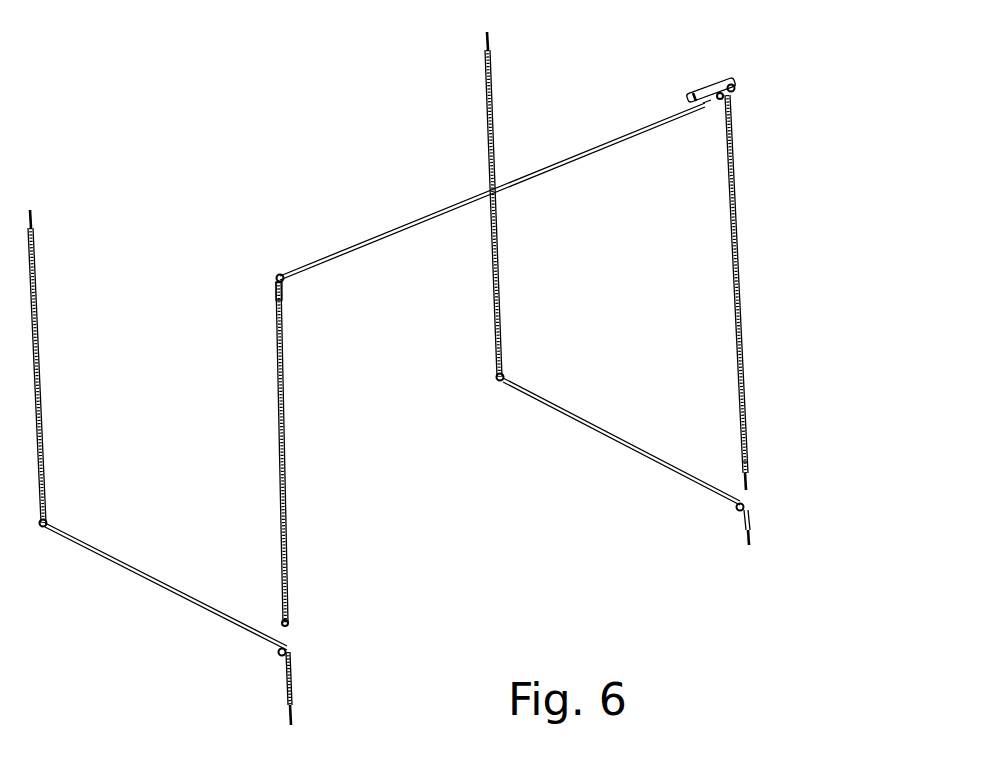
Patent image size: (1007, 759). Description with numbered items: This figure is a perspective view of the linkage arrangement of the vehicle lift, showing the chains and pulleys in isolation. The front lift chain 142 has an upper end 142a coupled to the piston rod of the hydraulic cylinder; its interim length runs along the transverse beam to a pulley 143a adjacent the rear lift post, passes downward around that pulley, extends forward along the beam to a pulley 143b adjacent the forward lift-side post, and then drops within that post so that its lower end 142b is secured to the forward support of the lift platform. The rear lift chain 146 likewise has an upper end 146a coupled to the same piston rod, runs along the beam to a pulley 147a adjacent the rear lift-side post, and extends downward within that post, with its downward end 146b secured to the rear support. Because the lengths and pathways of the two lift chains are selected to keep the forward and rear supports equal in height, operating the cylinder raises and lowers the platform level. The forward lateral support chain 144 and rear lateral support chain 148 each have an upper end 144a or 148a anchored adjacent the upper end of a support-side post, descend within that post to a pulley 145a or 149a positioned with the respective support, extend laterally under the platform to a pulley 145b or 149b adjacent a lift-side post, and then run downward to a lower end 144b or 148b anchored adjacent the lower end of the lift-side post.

The front lift chain 142 is at (283, 440).
The upper end of front lift chain 142a is at (709, 98).
The lower end of front lift chain 142b is at (288, 632).
The pulley 143a is at (722, 97).
The pulley 143b is at (283, 280).
The forward lateral support chain 144 is at (138, 576).
The upper end of forward lateral support chain 144a is at (30, 258).
The lower end of forward lateral support chain 144b is at (290, 685).
The pulley 145a is at (48, 520).
The pulley 145b is at (282, 652).
The rear lift chain 146 is at (737, 251).
The upper end of rear lift chain 146a is at (690, 88).
The downward end of rear lift chain 146b is at (745, 425).
The pulley 147a is at (735, 86).
The rear lateral support chain 148 is at (585, 418).
The upper end of rear lateral support chain 148a is at (487, 97).
The lower end of rear lateral support chain 148b is at (745, 505).
The pulley 149a is at (503, 372).
The pulley 149b is at (737, 507).